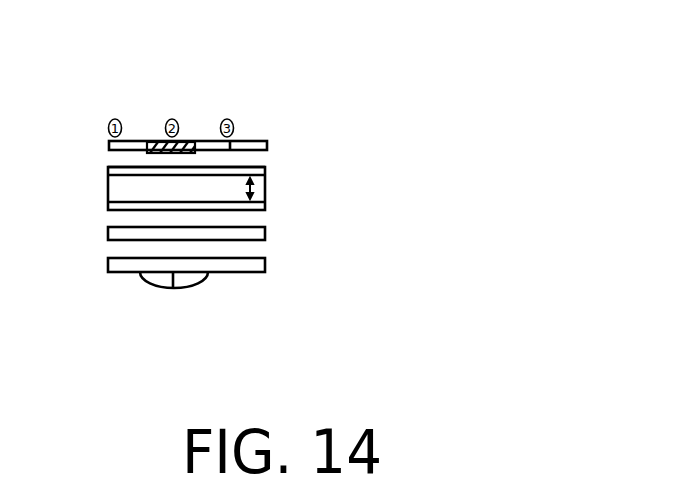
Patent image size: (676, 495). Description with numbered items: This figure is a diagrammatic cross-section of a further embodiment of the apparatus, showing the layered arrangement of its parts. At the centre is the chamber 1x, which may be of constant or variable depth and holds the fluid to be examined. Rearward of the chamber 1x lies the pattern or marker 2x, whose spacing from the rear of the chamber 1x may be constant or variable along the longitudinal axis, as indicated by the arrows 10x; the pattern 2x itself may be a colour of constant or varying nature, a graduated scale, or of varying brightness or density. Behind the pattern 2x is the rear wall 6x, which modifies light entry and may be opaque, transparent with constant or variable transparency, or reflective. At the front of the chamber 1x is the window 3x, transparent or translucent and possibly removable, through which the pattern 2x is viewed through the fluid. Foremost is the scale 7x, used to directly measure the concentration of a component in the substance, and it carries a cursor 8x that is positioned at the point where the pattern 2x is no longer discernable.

The rear wall 6x is at (267, 141).
The pattern or marker 2x is at (267, 170).
The arrows 10x is at (267, 181).
The chamber 1x is at (267, 208).
The window 3x is at (267, 234).
The scale 7x is at (267, 265).
The cursor 8x is at (158, 280).